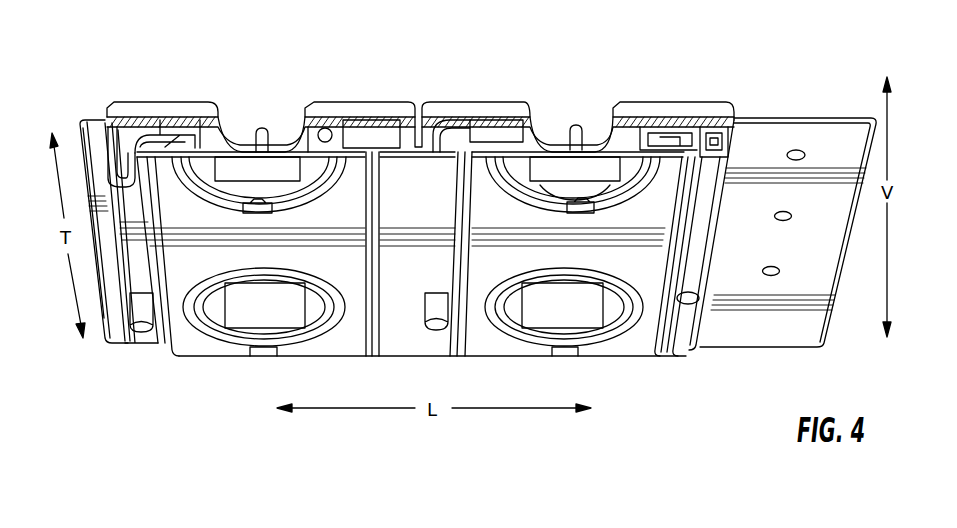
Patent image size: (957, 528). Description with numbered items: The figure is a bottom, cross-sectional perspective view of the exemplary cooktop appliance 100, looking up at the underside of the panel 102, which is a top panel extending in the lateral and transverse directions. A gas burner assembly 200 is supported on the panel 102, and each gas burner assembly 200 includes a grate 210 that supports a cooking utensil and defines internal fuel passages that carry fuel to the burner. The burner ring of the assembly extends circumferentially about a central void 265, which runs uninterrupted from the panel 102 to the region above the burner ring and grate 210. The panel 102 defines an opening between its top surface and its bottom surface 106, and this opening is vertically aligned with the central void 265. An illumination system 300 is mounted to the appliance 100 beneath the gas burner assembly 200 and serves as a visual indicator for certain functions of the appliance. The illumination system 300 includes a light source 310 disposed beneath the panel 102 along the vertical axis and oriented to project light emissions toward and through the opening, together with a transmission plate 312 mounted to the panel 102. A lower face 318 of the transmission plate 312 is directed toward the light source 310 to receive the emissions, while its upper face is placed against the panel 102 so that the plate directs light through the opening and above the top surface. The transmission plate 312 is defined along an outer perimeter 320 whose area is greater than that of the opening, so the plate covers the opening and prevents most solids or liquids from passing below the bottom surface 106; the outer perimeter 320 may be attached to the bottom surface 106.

The cooktop appliance 100 is at (440, 72).
The panel 102 is at (345, 250).
The bottom surface 106 is at (338, 215).
The gas burner assembly 200 is at (105, 110).
The grate 210 is at (162, 110).
The central void 265 is at (592, 108).
The illumination system 300 is at (614, 390).
The light source 310 is at (256, 213).
The transmission plate 312 is at (600, 172).
The lower face 318 is at (558, 180).
The outer perimeter 320 is at (212, 315).